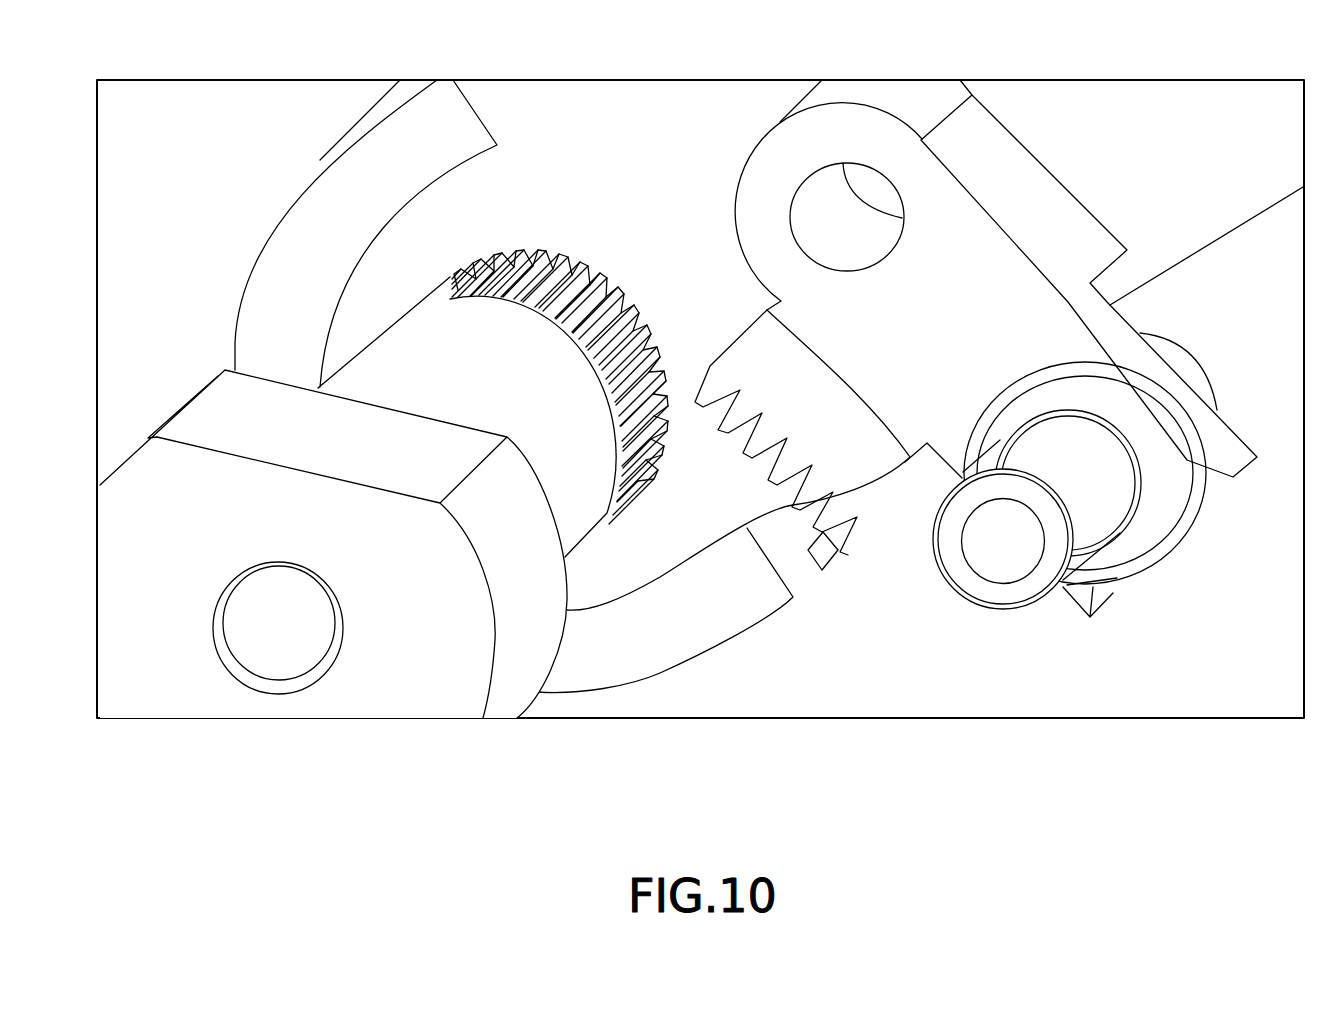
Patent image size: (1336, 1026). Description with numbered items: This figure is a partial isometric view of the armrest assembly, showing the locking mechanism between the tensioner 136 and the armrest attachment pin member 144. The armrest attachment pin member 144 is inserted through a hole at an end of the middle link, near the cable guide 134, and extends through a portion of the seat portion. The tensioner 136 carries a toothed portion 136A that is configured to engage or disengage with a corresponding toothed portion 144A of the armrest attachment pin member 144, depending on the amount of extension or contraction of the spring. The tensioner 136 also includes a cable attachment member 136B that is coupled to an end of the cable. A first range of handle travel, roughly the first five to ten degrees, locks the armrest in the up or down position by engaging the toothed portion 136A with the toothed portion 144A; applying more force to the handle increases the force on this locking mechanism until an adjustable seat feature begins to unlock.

The cable guide 134 is at (287, 232).
The tensioner 136 is at (980, 287).
The toothed portion 136A is at (867, 467).
The cable attachment member 136B is at (1023, 588).
The armrest attachment pin member 144 is at (407, 692).
The toothed portion 144A is at (650, 410).